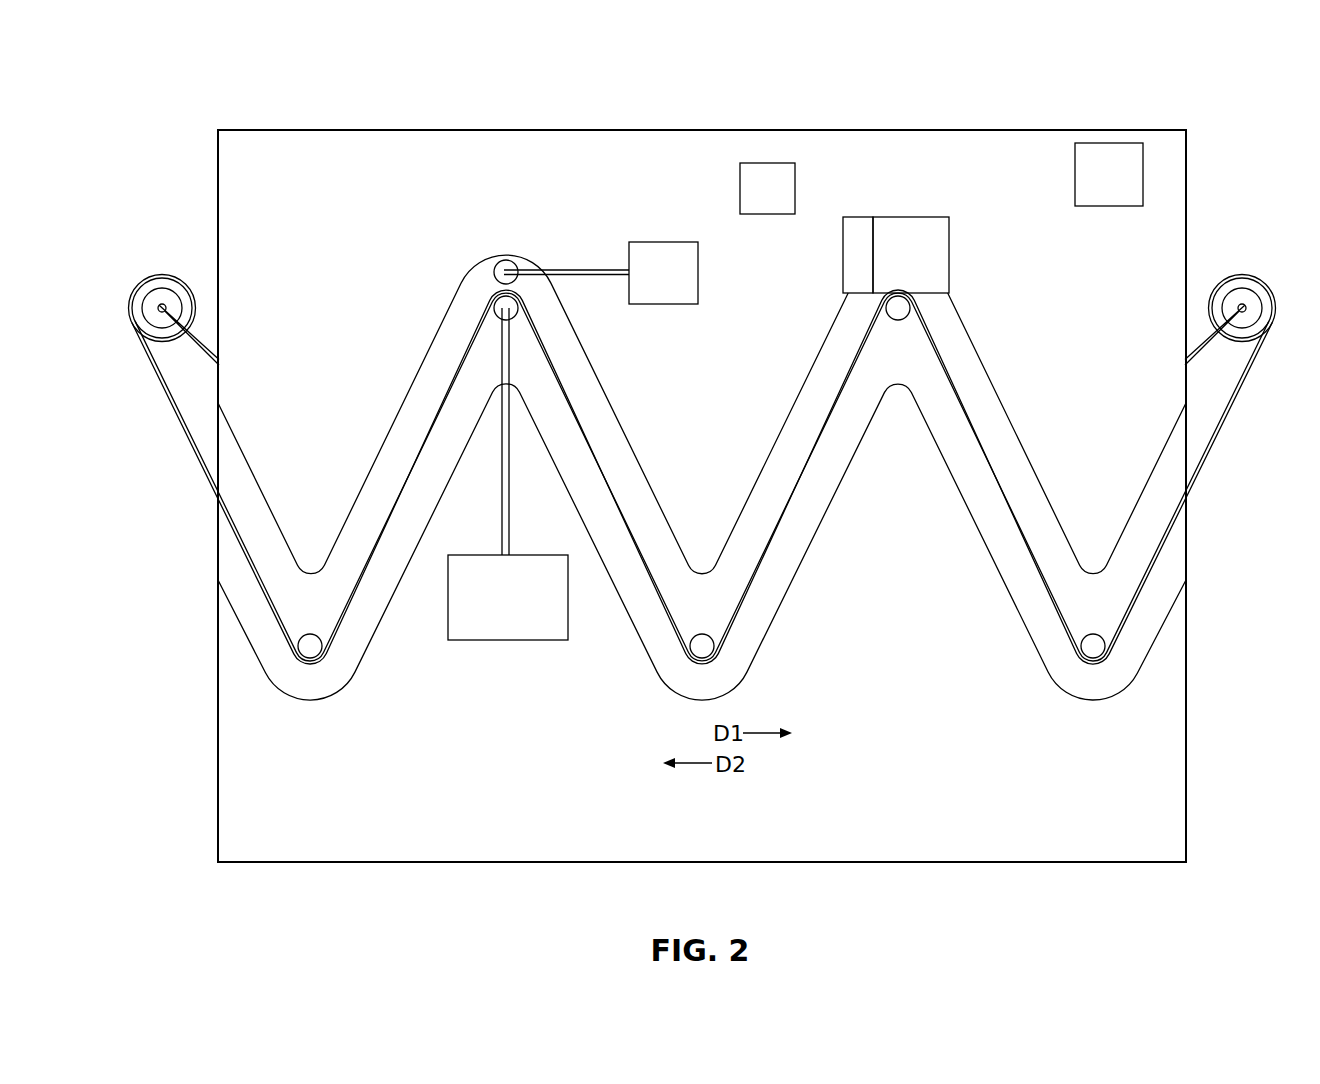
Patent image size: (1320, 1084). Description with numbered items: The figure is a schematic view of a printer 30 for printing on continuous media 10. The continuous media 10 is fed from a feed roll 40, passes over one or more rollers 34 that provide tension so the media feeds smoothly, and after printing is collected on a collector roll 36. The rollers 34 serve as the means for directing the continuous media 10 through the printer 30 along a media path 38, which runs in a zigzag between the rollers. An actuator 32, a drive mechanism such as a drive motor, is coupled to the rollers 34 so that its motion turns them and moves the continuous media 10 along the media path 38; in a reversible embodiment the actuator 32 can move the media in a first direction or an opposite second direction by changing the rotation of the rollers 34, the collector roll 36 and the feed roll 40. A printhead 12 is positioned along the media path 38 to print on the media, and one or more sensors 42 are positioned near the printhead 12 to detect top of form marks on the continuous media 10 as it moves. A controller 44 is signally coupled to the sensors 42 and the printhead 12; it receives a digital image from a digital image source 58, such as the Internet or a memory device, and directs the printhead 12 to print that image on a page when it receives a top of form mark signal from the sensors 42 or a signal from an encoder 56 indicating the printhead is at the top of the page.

The continuous media 10 is at (400, 468).
The printhead 12 is at (910, 233).
The printer 30 is at (1143, 872).
The actuator 32 is at (535, 610).
The rollers 34 is at (498, 262).
The collector roll 36 is at (1243, 277).
The media path 38 is at (258, 508).
The feed roll 40 is at (161, 277).
The sensors 42 is at (858, 235).
The controller 44 is at (1108, 165).
The encoder 56 is at (665, 252).
The digital image source 58 is at (778, 195).